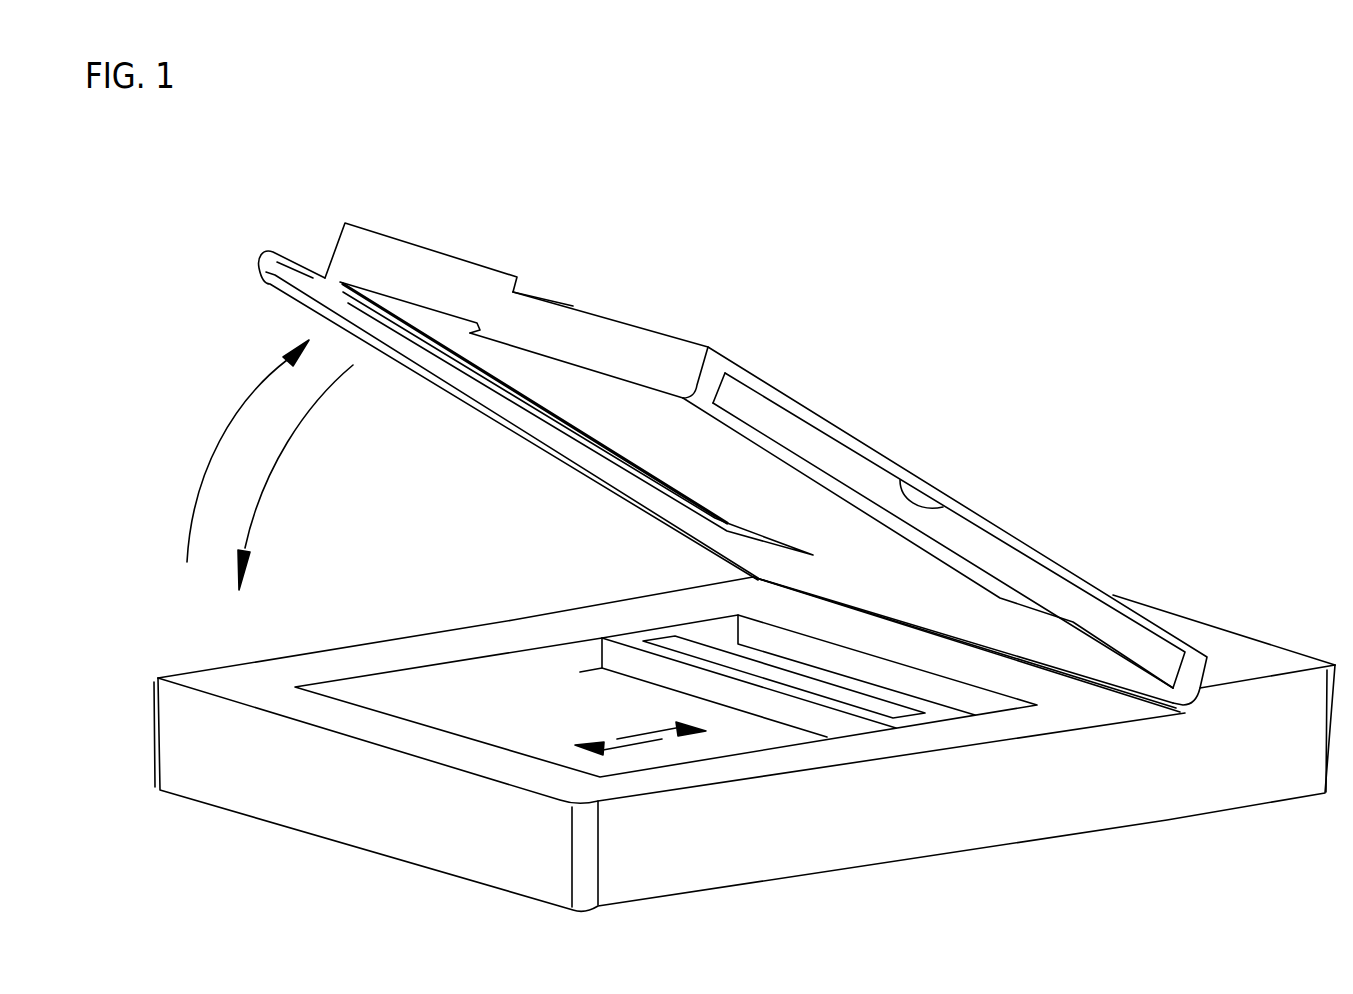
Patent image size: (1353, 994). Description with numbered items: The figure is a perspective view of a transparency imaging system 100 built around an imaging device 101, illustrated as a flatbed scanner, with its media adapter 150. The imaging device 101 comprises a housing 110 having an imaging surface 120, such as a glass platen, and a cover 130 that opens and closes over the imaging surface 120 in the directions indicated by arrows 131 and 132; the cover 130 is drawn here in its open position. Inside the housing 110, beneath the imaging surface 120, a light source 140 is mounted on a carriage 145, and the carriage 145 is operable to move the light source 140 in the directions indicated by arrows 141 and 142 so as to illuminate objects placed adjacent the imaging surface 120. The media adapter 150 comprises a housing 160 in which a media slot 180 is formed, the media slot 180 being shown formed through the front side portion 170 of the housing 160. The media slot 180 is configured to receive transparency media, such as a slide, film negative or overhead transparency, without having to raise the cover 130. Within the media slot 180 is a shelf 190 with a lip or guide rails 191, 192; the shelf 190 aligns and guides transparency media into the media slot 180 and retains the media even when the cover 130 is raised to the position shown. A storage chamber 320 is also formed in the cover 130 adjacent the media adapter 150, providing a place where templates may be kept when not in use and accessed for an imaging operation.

The transparency imaging system 100 is at (896, 334).
The imaging device 101 is at (128, 684).
The housing 110 is at (380, 750).
The imaging surface 120 is at (510, 653).
The cover 130 is at (660, 332).
The arrow 131 is at (200, 458).
The arrow 132 is at (267, 462).
The light source 140 is at (878, 695).
The arrow 141 is at (662, 743).
The arrow 142 is at (617, 738).
The carriage 145 is at (872, 716).
The media adapter 150 is at (418, 218).
The housing 160 is at (517, 290).
The front side portion 170 is at (333, 240).
The media slot 180 is at (415, 304).
The shelf 190 is at (515, 440).
The guide rail 191 is at (427, 323).
The guide rail 192 is at (453, 332).
The storage chamber 320 is at (943, 507).